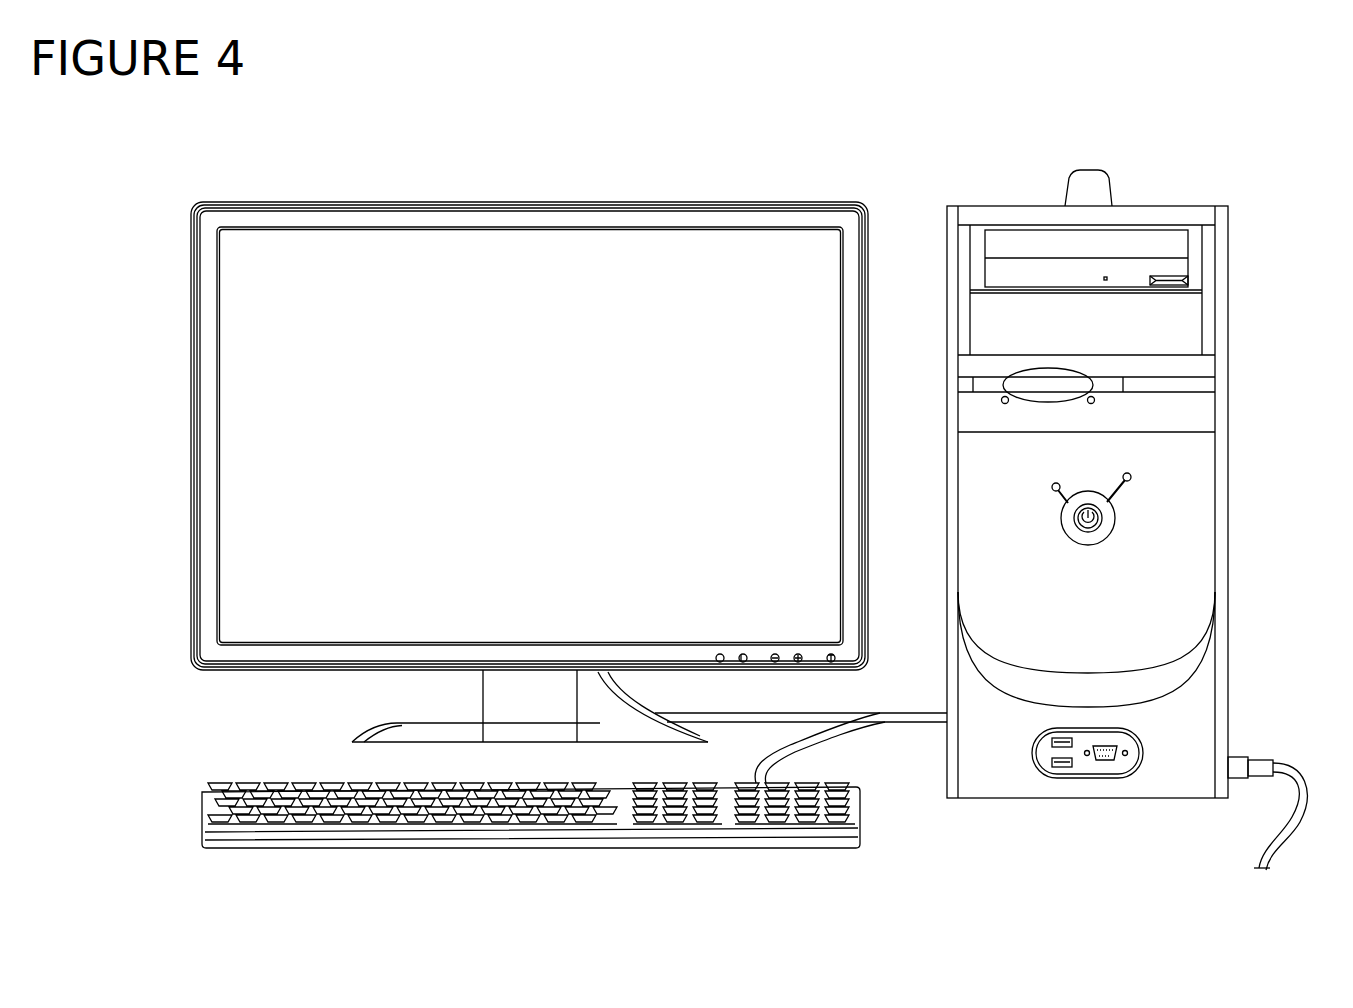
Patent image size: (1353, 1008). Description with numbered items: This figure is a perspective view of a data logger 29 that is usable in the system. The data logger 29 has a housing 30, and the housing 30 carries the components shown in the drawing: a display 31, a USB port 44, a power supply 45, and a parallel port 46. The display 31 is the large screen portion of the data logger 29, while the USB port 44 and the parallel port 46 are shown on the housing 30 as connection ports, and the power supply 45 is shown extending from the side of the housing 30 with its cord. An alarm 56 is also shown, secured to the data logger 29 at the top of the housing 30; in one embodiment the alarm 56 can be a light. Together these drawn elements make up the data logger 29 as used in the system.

The data logger 29 is at (1274, 110).
The housing 30 is at (1200, 206).
The display 31 is at (298, 243).
The USB port 44 is at (1074, 770).
The power supply 45 is at (1250, 765).
The parallel port 46 is at (1105, 762).
The alarm 56 is at (1086, 175).